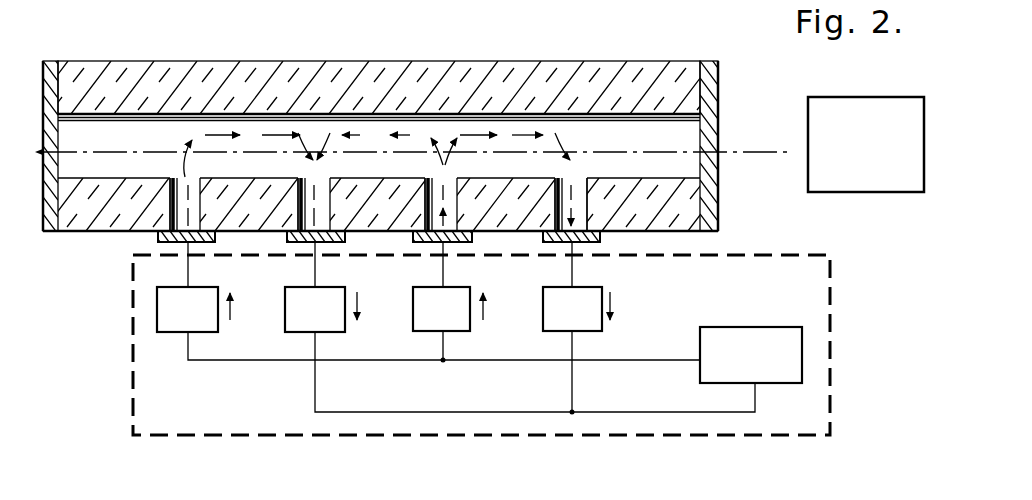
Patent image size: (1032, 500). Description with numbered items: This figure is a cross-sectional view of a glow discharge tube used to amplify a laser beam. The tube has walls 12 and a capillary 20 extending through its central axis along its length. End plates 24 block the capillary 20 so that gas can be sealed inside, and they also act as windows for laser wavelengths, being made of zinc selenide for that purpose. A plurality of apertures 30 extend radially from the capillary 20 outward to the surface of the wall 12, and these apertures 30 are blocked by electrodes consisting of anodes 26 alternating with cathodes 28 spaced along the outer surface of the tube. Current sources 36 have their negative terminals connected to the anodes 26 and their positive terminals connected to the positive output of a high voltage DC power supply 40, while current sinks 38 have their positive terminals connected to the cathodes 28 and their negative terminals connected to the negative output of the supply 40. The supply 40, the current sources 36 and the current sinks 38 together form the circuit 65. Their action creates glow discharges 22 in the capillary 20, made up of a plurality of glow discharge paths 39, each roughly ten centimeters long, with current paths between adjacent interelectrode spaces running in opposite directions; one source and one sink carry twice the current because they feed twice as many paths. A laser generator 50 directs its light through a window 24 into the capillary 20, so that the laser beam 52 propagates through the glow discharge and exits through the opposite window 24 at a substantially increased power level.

The walls 12 is at (500, 61).
The end plates 24 is at (45, 62).
The capillary 20 is at (90, 175).
The laser beam 52 is at (740, 152).
The glow discharge path 39 is at (285, 135).
The apertures 30 is at (302, 178).
The glow discharges 22 is at (580, 167).
The electrodes (anodes) 26 is at (215, 237).
The electrodes (cathodes) 28 is at (345, 237).
The laser generator 50 is at (919, 182).
The current sources 36 is at (163, 334).
The current sinks 38 is at (290, 331).
The high voltage DC power supply 40 is at (765, 328).
The circuit 65 is at (320, 437).